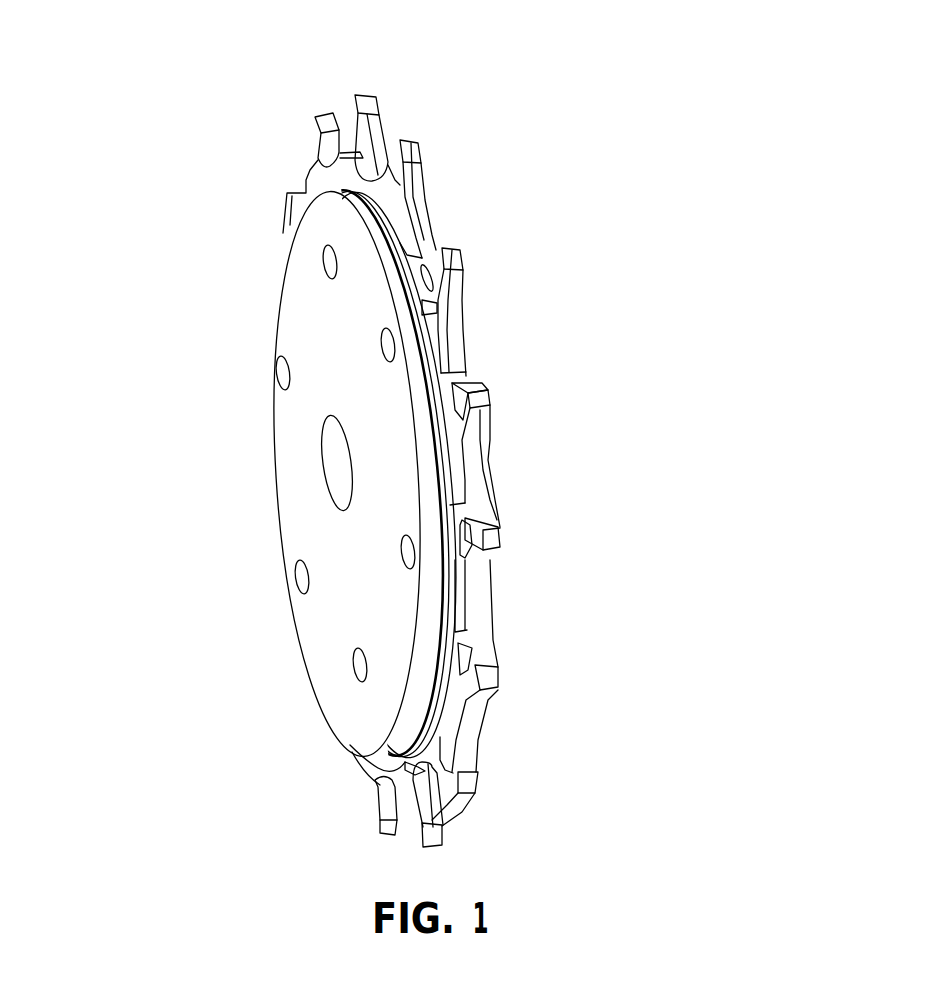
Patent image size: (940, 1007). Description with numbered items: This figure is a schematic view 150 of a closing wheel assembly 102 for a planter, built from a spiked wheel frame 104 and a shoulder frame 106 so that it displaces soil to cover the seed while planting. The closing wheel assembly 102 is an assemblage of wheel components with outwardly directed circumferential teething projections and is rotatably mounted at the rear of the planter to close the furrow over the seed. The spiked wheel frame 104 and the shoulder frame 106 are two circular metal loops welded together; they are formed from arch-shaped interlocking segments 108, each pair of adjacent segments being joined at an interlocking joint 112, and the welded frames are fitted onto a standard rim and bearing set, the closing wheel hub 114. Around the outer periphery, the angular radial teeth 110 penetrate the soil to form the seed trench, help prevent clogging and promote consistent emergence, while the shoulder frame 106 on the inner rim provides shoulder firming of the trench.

The closing wheel assembly 102 is at (326, 101).
The spiked wheel frame 104 is at (417, 207).
The shoulder frame 106 is at (455, 464).
The arch-shaped interlocking segment 108 is at (433, 777).
The radial teeth 110 is at (500, 545).
The interlocking joint 112 is at (433, 312).
The closing wheel hub 114 is at (290, 438).
The schematic view 150 is at (750, 750).